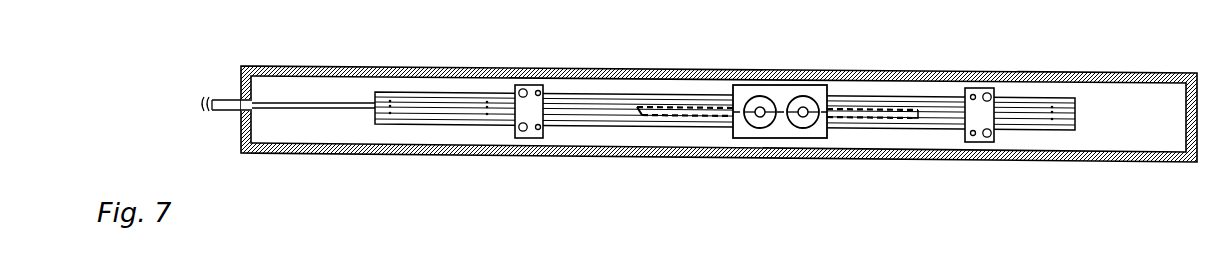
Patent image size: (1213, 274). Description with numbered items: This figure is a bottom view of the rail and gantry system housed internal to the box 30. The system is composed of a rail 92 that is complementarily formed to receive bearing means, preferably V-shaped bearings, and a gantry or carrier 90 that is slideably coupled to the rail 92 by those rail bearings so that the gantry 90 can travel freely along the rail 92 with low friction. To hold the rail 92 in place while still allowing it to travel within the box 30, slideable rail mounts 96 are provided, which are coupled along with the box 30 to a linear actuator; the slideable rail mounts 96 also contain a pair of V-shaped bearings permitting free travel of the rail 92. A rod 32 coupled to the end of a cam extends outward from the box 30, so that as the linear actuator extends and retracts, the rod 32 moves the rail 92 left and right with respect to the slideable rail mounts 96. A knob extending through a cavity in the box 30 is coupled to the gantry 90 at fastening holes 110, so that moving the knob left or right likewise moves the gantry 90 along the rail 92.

The box 30 is at (267, 138).
The rod 32 is at (220, 110).
The gantry or carrier 90 is at (782, 97).
The rail 92 is at (588, 110).
The slideable rail mounts 96 is at (980, 118).
The fastening holes 110 is at (802, 125).